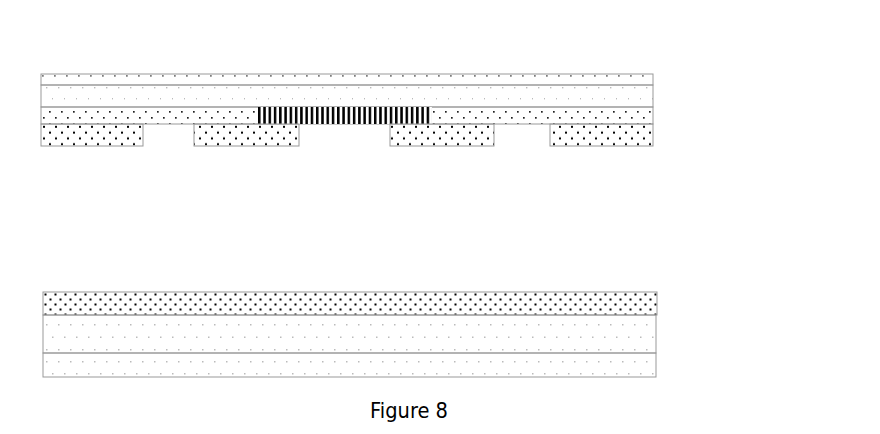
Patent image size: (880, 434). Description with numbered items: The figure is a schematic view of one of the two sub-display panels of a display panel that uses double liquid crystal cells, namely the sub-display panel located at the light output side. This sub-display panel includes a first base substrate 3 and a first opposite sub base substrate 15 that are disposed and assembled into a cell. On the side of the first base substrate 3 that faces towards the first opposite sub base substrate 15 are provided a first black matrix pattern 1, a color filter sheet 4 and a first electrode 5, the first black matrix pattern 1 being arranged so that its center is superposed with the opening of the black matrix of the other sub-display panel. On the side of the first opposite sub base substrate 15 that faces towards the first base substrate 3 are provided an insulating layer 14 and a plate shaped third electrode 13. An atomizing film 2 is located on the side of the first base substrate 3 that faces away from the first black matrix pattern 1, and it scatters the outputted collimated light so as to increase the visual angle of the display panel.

The first black matrix pattern 1 is at (397, 107).
The atomizing film 2 is at (653, 74).
The first base substrate 3 is at (653, 85).
The color filter sheet 4 is at (653, 106).
The first electrode 5 is at (653, 124).
The third electrode 13 is at (657, 299).
The insulating layer 14 is at (656, 324).
The first opposite sub base substrate 15 is at (656, 363).